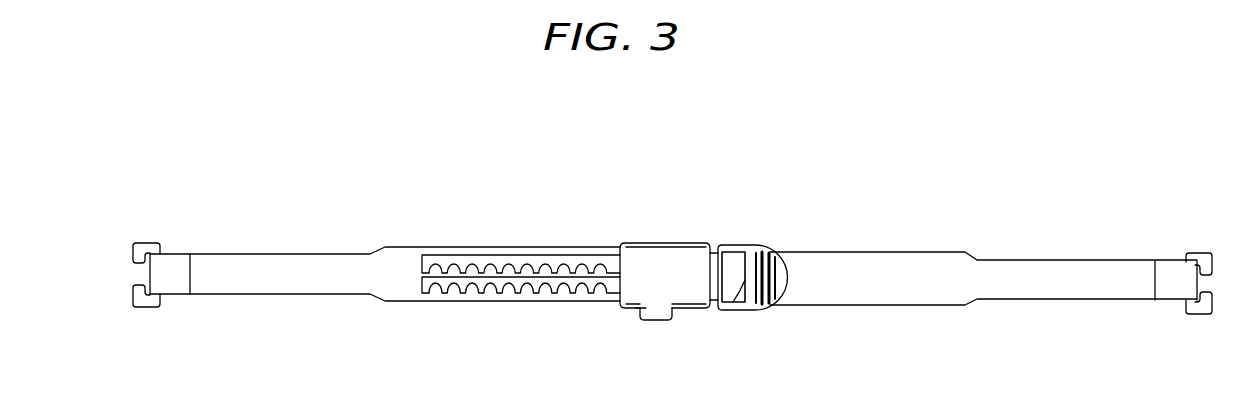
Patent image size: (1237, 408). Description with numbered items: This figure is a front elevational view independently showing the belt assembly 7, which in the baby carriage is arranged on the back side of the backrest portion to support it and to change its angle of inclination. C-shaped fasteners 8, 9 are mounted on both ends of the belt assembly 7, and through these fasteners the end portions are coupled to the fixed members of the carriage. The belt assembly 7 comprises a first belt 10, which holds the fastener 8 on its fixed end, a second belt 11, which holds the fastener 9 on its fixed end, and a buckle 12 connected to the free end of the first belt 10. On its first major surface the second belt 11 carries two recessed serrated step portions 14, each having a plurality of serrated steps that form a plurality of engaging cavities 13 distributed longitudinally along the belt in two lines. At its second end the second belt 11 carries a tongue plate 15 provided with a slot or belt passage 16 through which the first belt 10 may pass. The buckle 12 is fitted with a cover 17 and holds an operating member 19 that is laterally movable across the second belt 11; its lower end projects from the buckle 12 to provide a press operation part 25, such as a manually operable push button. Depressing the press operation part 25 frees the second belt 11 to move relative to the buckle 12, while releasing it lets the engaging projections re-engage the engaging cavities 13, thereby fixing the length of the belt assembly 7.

The belt assembly 7 is at (543, 121).
The C-shaped fastener 8 is at (1199, 256).
The C-shaped fastener 9 is at (147, 243).
The first belt 10 is at (933, 249).
The second belt 11 is at (349, 249).
The buckle 12 is at (660, 278).
The engaging cavities 13 is at (497, 266).
The serrated step portions 14 is at (562, 262).
The tongue plate 15 is at (749, 273).
The belt passage 16 is at (731, 301).
The cover 17 is at (690, 258).
The operating member 19 is at (641, 325).
The press operation part 25 is at (660, 322).